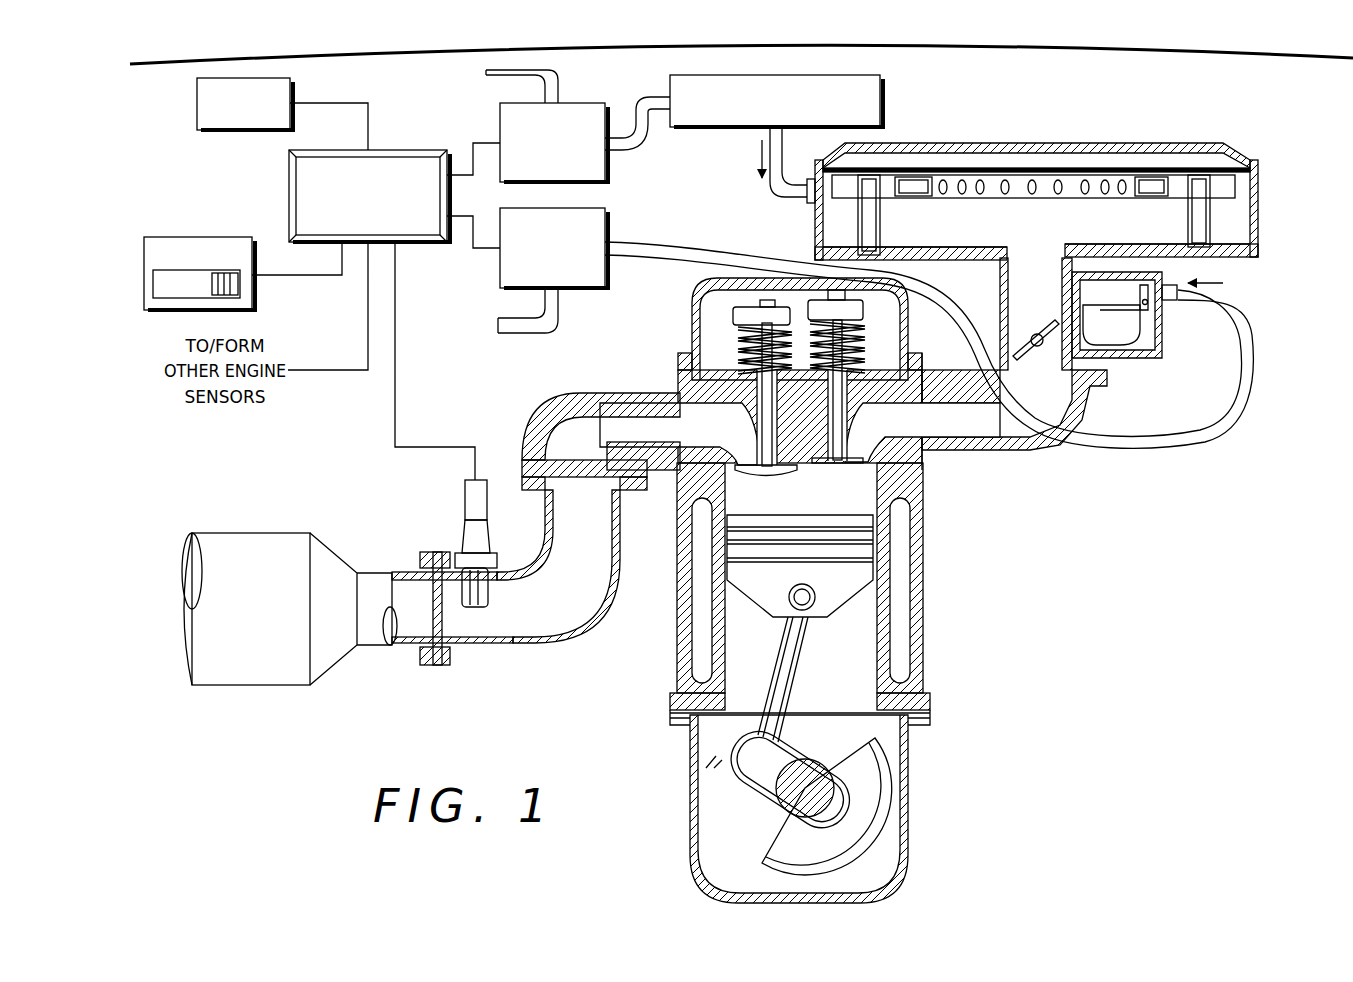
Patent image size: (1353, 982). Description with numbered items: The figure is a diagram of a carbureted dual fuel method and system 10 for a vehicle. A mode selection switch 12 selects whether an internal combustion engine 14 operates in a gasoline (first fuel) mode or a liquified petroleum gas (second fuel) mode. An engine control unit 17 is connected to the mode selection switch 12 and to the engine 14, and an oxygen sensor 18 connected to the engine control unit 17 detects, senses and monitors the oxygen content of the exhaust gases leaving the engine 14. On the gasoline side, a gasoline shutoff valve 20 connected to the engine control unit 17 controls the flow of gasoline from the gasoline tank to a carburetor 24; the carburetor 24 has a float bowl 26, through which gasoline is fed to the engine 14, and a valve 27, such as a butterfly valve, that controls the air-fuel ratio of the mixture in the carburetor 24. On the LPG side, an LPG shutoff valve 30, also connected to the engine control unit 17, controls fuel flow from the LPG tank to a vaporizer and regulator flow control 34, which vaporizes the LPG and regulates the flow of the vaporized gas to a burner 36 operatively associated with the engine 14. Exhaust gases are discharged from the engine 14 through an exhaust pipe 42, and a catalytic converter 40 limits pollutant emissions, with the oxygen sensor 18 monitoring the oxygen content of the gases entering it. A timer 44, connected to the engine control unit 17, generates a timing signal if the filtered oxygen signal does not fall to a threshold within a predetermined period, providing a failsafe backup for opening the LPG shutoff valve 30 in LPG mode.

The carbureted dual fuel method and system 10 is at (471, 757).
The mode selection switch 12 is at (180, 237).
The internal combustion engine 14 is at (918, 531).
The engine control unit 17 is at (289, 191).
The oxygen sensor 18 is at (468, 535).
The gasoline shutoff valve 20 is at (584, 289).
The carburetor 24 is at (1002, 300).
The float bowl 26 is at (1133, 332).
The valve 27 is at (1020, 345).
The LPG shutoff valve 30 is at (503, 183).
The vaporizer and regulator flow control 34 is at (698, 130).
The burner 36 is at (990, 185).
The catalytic converter 40 is at (263, 545).
The exhaust pipe 42 is at (572, 610).
The timer 44 is at (197, 105).